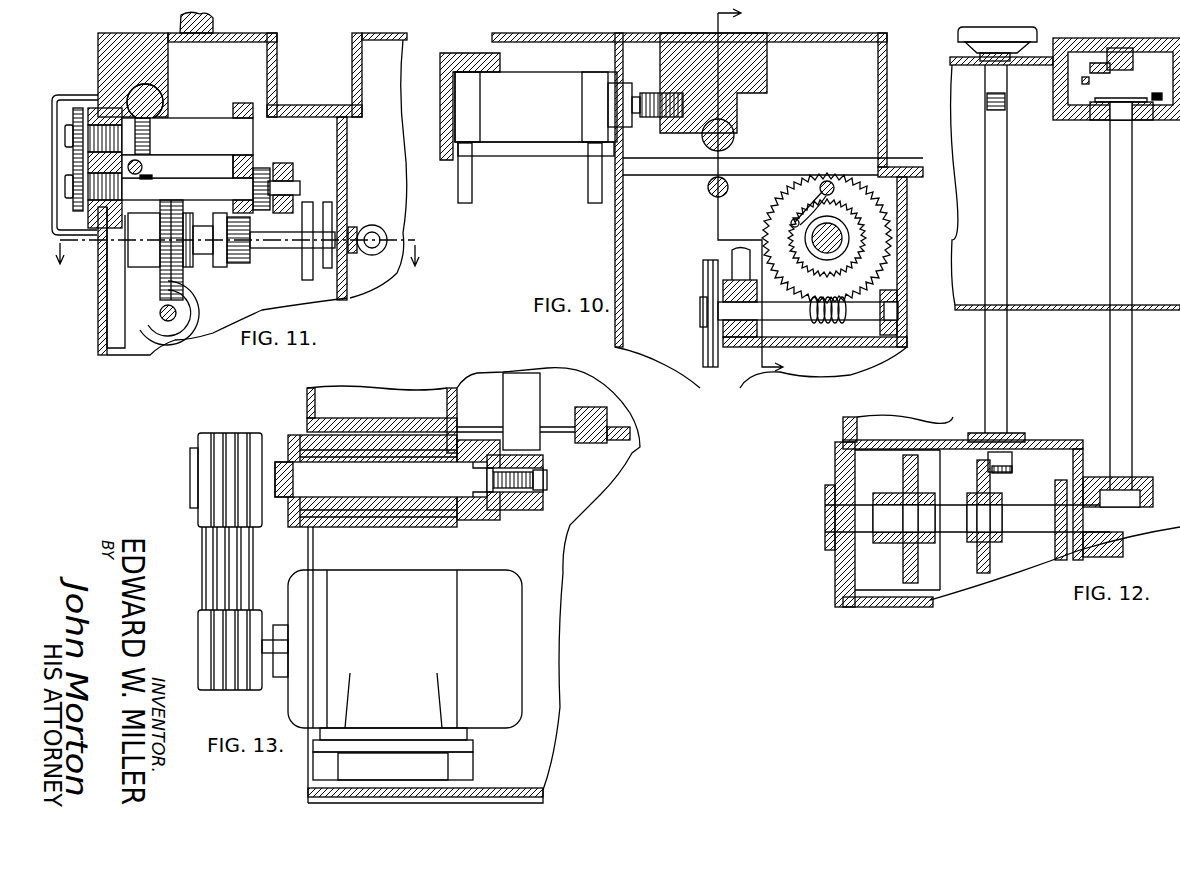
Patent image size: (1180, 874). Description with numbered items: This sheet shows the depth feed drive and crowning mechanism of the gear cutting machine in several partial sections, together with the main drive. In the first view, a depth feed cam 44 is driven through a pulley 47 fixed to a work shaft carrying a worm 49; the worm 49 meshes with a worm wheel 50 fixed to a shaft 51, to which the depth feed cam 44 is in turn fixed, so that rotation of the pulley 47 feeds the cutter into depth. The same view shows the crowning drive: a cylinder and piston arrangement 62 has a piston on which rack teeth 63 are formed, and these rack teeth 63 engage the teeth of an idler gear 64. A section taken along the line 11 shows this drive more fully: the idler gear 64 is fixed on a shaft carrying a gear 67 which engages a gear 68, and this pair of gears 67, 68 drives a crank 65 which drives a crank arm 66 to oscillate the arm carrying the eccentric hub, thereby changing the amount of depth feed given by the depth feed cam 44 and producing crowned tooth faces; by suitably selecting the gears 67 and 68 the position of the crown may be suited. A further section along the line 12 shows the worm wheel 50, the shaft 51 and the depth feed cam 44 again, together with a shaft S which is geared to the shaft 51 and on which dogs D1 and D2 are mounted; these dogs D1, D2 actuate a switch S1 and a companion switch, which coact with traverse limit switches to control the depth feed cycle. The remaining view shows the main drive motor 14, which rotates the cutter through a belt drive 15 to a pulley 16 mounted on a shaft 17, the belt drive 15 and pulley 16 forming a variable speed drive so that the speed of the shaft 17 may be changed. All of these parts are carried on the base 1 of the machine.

In FIG. 11, the base 1 is at (100, 340).
In FIG. 10, the base 1 is at (616, 230).
In FIG. 13, the base 1 is at (307, 405).
In FIG. 10, the section line 11— 11 is at (766, 188).
In FIG. 11, the section line 12— 12 is at (237, 270).
In FIG. 13, the main drive motor 14 is at (502, 588).
In FIG. 13, the belt drive 15 is at (203, 553).
In FIG. 13, the pulley 16 is at (193, 472).
In FIG. 13, the shaft 17 is at (392, 490).
In FIG. 11, the depth feed cam 44 is at (306, 276).
In FIG. 10, the depth feed cam 44 is at (808, 293).
In FIG. 12, the depth feed cam 44 is at (1060, 560).
In FIG. 10, the pulley 47 is at (702, 271).
In FIG. 11, the worm 49 is at (168, 322).
In FIG. 10, the worm 49 is at (838, 325).
In FIG. 11, the worm wheel 50 is at (160, 308).
In FIG. 10, the worm wheel 50 is at (880, 238).
In FIG. 12, the worm wheel 50 is at (915, 580).
In FIG. 11, the shaft 51 is at (275, 255).
In FIG. 12, the shaft 51 is at (1020, 545).
In FIG. 10, the cylinder and piston arrangement 62 is at (540, 82).
In FIG. 11, the rack teeth 63 is at (160, 120).
In FIG. 10, the rack teeth 63 is at (670, 120).
In FIG. 11, the idler gear 64 is at (150, 158).
In FIG. 10, the idler gear 64 is at (738, 140).
In FIG. 11, the crank 65 is at (262, 172).
In FIG. 11, the crank arm 66 is at (288, 170).
In FIG. 11, the gear 67 is at (80, 112).
In FIG. 11, the gear 68 is at (85, 214).
In FIG. 12, the shaft S is at (1133, 232).
In FIG. 12, the switch S1 is at (1080, 80).
In FIG. 12, the dog D1 is at (1100, 62).
In FIG. 12, the dog D2 is at (1092, 110).